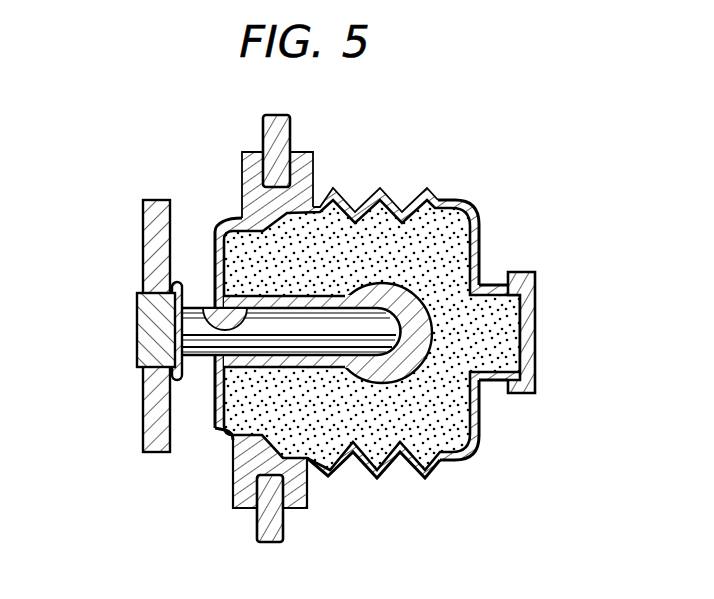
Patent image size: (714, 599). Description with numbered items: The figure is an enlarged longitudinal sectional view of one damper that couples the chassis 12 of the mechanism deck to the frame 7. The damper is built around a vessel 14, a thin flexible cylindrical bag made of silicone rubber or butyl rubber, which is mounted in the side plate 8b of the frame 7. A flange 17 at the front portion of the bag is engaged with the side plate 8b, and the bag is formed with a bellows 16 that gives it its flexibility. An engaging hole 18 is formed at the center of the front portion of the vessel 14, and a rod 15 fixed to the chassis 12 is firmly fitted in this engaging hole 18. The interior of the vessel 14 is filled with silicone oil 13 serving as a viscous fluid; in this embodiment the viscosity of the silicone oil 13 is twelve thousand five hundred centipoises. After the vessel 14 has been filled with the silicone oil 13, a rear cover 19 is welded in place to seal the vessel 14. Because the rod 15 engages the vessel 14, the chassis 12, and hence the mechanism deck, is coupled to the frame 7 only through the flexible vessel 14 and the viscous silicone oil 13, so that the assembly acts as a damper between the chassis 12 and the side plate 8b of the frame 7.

The frame 7 is at (262, 127).
The side plate 8b is at (283, 142).
The chassis 12 is at (150, 242).
The silicone oil 13 is at (453, 435).
The vessel 14 is at (490, 220).
The rod 15 is at (200, 340).
The bellows 16 is at (401, 200).
The flange 17 is at (321, 205).
The engaging hole 18 is at (203, 305).
The rear cover 19 is at (533, 327).